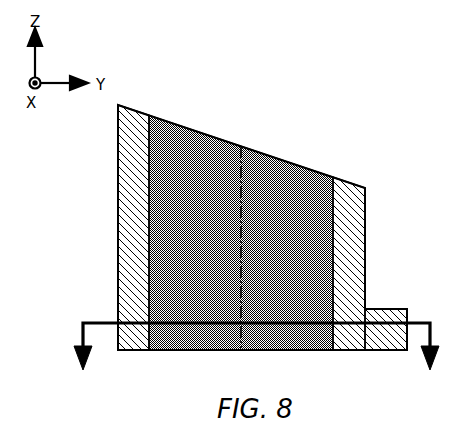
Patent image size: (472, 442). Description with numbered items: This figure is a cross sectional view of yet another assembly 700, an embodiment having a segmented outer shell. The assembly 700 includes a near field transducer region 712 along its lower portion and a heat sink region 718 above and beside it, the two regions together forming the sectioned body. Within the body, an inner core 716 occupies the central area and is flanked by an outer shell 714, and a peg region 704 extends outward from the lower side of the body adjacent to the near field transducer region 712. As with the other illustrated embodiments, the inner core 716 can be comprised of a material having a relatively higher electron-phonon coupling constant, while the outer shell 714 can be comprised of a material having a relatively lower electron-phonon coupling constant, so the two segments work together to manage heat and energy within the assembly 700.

The assembly 700 is at (119, 78).
The heat sink region 718 is at (116, 180).
The inner core 716 is at (203, 163).
The outer shell 714 is at (352, 232).
The peg region 704 is at (408, 313).
The near field transducer region 712 is at (112, 312).